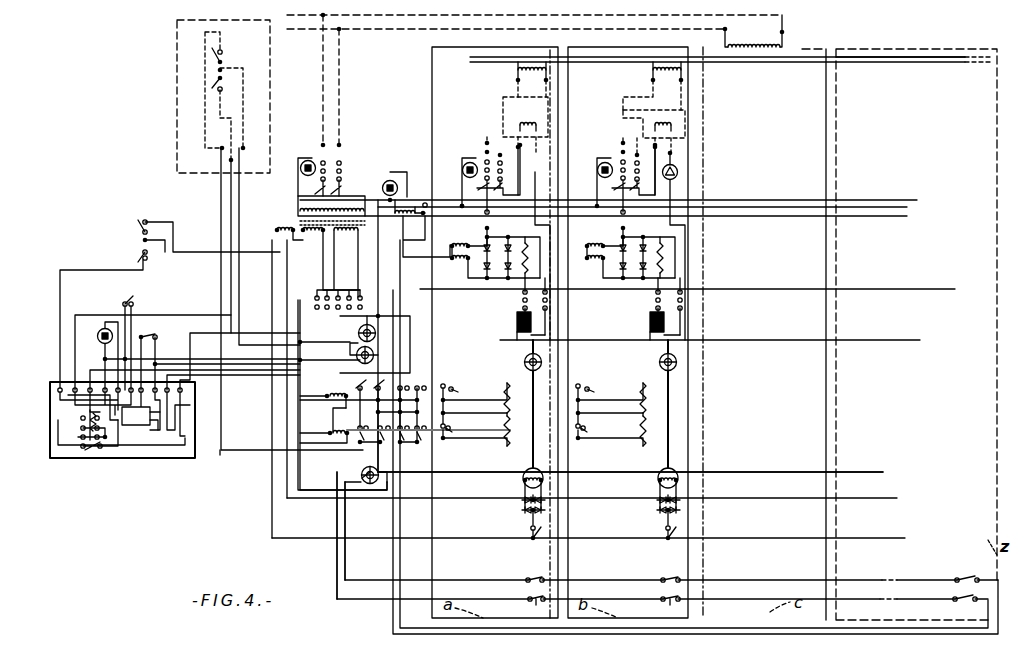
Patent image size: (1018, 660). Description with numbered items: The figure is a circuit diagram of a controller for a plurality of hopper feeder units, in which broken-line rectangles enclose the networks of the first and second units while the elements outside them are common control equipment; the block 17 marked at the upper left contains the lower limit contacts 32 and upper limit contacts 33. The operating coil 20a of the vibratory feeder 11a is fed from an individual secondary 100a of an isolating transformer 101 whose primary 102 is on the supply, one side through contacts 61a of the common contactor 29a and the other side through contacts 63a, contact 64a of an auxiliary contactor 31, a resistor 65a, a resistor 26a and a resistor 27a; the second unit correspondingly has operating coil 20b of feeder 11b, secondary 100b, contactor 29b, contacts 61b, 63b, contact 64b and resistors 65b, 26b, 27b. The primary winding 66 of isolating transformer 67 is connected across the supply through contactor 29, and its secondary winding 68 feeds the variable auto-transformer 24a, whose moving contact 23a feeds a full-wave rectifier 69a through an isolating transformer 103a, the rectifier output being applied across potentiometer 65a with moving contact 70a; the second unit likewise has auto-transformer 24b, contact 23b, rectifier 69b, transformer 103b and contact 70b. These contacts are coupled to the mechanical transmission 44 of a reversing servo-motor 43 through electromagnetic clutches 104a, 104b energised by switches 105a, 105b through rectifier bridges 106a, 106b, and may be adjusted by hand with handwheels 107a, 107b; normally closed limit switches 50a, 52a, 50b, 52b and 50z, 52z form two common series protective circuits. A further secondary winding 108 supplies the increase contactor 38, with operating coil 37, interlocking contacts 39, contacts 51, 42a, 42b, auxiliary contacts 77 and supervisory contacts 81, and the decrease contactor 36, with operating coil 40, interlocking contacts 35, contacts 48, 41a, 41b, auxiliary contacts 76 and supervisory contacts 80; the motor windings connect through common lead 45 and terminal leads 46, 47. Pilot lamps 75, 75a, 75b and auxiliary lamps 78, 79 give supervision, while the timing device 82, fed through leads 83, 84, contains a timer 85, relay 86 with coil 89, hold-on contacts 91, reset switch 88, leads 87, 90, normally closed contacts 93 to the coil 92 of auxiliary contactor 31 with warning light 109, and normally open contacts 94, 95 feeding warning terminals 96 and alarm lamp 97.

The control unit 17 is at (177, 130).
The lower limit contacts 32 is at (222, 54).
The upper limit contacts 33 is at (222, 87).
The indicator lamp 75 is at (301, 165).
The contactor 29 is at (341, 169).
The primary winding 66 is at (300, 198).
The isolating transformer 67 is at (313, 212).
The further secondary winding 108 is at (277, 238).
The secondary winding 68 is at (338, 235).
The warning light 109 is at (409, 181).
The operating coil 92 is at (400, 210).
The auxiliary contactor 31 is at (400, 232).
The auxiliary lamp 79 is at (370, 324).
The auxiliary lamp 78 is at (356, 358).
The operating coil 37 is at (337, 390).
The interlocking contacts 39 is at (365, 382).
The auxiliary contacts 77 is at (382, 384).
The normally open contacts 51 is at (405, 385).
The supervisory contacts 81 is at (420, 386).
The increase contactor 38 is at (324, 392).
The operating coil 40 is at (333, 420).
The decrease contactor 36 is at (324, 431).
The interlocking contacts 35 is at (358, 440).
The common lead 45 is at (300, 478).
The reversing electroservo motor 43 is at (368, 484).
The auxiliary contacts 76 is at (386, 434).
The normally open contacts 48 is at (403, 436).
The supervisory contacts 80 is at (422, 436).
The terminal lead 46 is at (337, 553).
The terminal lead 47 is at (345, 553).
The timing device 82 is at (186, 458).
The warning terminals 96 is at (132, 333).
The alarm indicator lamp 97 is at (98, 334).
The reset switch 88 is at (151, 351).
The lead 84 is at (232, 340).
The lead 83 is at (232, 360).
The lead 87 is at (155, 410).
The lead 90 is at (158, 425).
The relay 86 is at (59, 425).
The coil 89 is at (80, 410).
The hold-on contacts 91 is at (83, 428).
The normally open contacts 94 is at (83, 437).
The normally closed contacts 93 is at (93, 450).
The normally open contacts 95 is at (108, 438).
The timer 85 is at (128, 418).
The secondary 100a is at (530, 57).
The operating coil 20a is at (505, 112).
The vibratory feeder 11a is at (548, 100).
The common contactor 29a is at (513, 158).
The indicator lamp 75a is at (466, 164).
The contacts 61a is at (500, 213).
The contact 64a is at (503, 200).
The moving contact 70a is at (500, 225).
The contacts 63a is at (493, 247).
The resistor 65a is at (517, 256).
The full-wave rectifier 69a is at (523, 262).
The moving contact 23a is at (530, 322).
The variable auto-transformer 24a is at (517, 330).
The handwheel 107a is at (542, 362).
The normally open contacts 42a is at (452, 386).
The resistor 26a is at (505, 386).
The resistor 27a is at (505, 418).
The normally closed contacts 41a is at (452, 436).
The electromagnetic clutch 104a is at (523, 482).
The rectifier bridge 106a is at (548, 508).
The switch 105a is at (530, 535).
The limit switch 50a is at (530, 578).
The limit switch 52a is at (528, 607).
The isolating transformer 103a is at (450, 256).
The secondary 100b is at (665, 57).
The operating coil 20b is at (645, 118).
The vibratory feeder 11b is at (688, 118).
The indicator lamp 75b is at (603, 162).
The main contactor 29b is at (672, 183).
The contacts 61b is at (635, 214).
The contact 64b is at (645, 213).
The moving contact 70b is at (665, 262).
The contacts 63b is at (629, 247).
The resistor 65b is at (647, 248).
The full-wave rectifier 69b is at (658, 262).
The isolating transformer 103b is at (585, 260).
The moving contact 23b is at (668, 322).
The variable auto-transformer 24b is at (650, 330).
The handwheel 107b is at (677, 362).
The normally open contacts 42b is at (588, 386).
The resistor 26b is at (648, 390).
The resistor 27b is at (648, 420).
The normally closed contacts 41b is at (585, 434).
The electromagnetic clutch 104b is at (658, 482).
The rectifier bridge 106b is at (683, 508).
The switch 105b is at (663, 535).
The limit switch 50b is at (665, 578).
The limit switch 52b is at (665, 607).
The mechanical transmission 44 is at (783, 470).
The primary 102 is at (754, 31).
The isolating transformer 101 is at (884, 56).
The limit switch 50z is at (965, 578).
The limit switch 52z is at (963, 601).